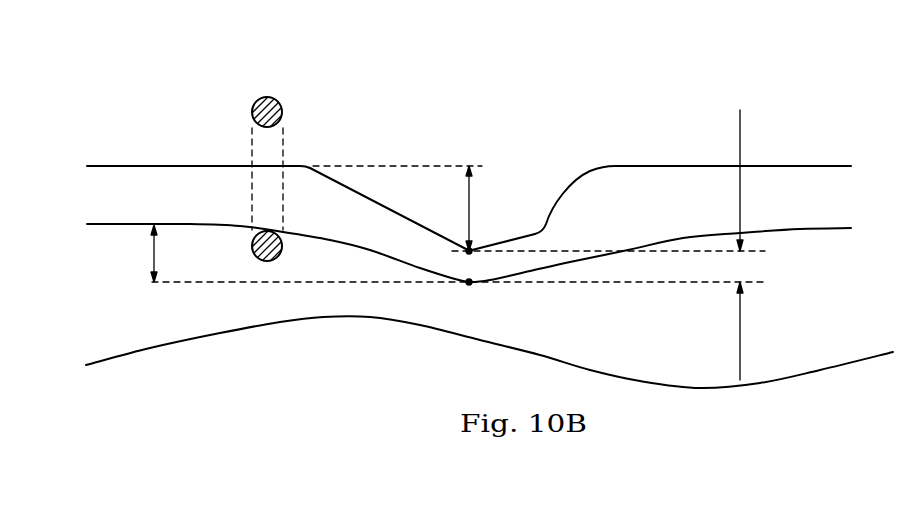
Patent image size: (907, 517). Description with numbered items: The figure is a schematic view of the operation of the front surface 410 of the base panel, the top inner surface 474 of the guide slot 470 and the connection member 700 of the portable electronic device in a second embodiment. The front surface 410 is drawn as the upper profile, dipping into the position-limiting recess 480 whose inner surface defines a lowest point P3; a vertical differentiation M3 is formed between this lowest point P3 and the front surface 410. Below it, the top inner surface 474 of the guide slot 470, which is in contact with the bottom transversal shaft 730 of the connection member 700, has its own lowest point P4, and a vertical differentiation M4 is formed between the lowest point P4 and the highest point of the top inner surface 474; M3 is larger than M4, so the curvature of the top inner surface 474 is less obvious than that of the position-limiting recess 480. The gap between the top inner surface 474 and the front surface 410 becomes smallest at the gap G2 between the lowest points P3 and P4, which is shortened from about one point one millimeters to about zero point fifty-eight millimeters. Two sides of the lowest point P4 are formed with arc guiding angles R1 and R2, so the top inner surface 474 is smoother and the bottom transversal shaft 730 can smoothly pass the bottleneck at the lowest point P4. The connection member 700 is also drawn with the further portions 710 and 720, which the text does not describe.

The front surface 410 is at (150, 165).
The guide slot 470 is at (469, 196).
The top inner surface 474 is at (123, 227).
The position-limiting recess 480 is at (555, 193).
The connection member 700 is at (269, 155).
The reference plane (dashed) 710 is at (272, 152).
The upper roller 720 is at (283, 113).
The bottom transversal shaft 730 is at (281, 255).
The arc guiding angle R1 is at (313, 235).
The arc guiding angle R2 is at (629, 248).
The lowest point P3 is at (466, 248).
The lowest point P4 is at (468, 283).
The vertical differentiation M3 is at (472, 203).
The vertical differentiation M4 is at (156, 262).
The gap G2 is at (458, 245).